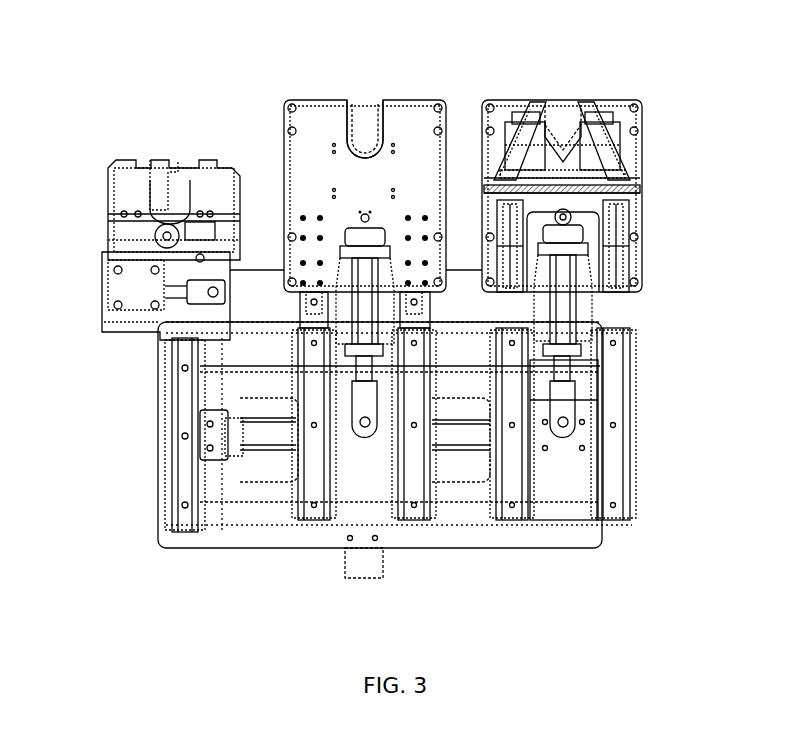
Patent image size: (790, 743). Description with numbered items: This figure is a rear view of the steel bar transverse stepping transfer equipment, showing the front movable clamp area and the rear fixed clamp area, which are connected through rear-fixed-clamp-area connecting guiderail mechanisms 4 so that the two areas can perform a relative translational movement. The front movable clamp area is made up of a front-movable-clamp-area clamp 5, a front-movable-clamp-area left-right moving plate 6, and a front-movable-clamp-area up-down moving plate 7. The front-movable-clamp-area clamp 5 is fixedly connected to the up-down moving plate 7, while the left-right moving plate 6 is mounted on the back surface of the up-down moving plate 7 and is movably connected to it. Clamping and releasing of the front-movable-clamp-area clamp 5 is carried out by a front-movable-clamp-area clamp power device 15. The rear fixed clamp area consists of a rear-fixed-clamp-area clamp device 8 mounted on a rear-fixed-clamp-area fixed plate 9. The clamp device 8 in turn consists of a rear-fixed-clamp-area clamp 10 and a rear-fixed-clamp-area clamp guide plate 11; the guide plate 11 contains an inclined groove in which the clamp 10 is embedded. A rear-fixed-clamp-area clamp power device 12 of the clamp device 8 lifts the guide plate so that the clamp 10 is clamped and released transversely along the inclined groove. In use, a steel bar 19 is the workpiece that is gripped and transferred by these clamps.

The rear-fixed-clamp-area connecting guiderail mechanism 4 is at (233, 358).
The front-movable-clamp-area clamp 5 is at (128, 192).
The front-movable-clamp-area left-right moving plate 6 is at (540, 540).
The front-movable-clamp-area up-down moving plate 7 is at (260, 286).
The rear-fixed-clamp-area clamp device 8 is at (355, 114).
The rear-fixed-clamp-area fixed plate 9 is at (565, 485).
The rear-fixed-clamp-area clamp 10 is at (576, 135).
The rear-fixed-clamp-area clamp guide plate 11 is at (635, 148).
The rear-fixed-clamp-area clamp power device 12 is at (648, 312).
The front-movable-clamp-area clamp power device 15 is at (128, 291).
The steel bar 19 is at (458, 435).